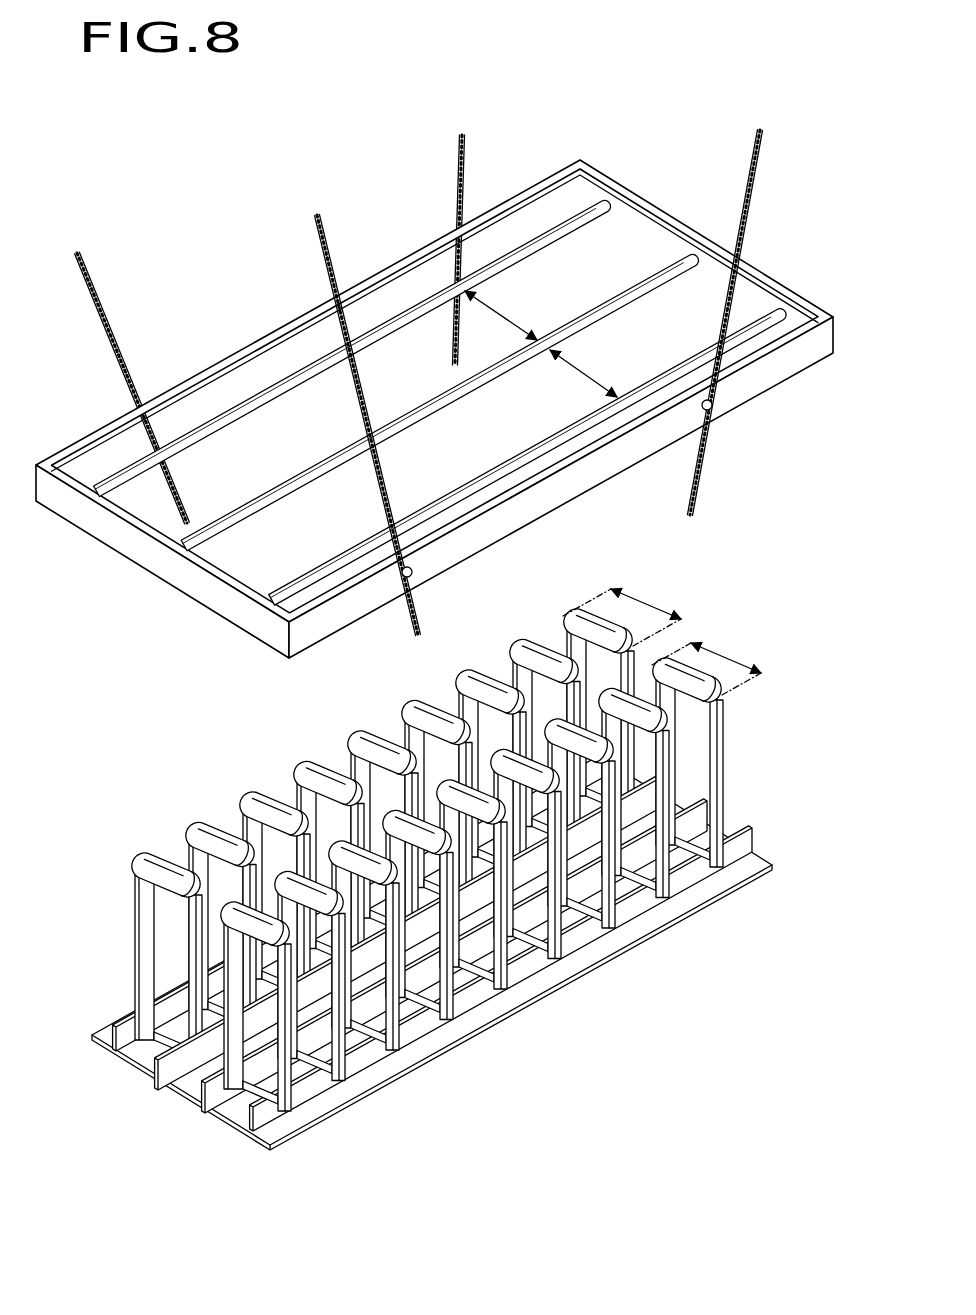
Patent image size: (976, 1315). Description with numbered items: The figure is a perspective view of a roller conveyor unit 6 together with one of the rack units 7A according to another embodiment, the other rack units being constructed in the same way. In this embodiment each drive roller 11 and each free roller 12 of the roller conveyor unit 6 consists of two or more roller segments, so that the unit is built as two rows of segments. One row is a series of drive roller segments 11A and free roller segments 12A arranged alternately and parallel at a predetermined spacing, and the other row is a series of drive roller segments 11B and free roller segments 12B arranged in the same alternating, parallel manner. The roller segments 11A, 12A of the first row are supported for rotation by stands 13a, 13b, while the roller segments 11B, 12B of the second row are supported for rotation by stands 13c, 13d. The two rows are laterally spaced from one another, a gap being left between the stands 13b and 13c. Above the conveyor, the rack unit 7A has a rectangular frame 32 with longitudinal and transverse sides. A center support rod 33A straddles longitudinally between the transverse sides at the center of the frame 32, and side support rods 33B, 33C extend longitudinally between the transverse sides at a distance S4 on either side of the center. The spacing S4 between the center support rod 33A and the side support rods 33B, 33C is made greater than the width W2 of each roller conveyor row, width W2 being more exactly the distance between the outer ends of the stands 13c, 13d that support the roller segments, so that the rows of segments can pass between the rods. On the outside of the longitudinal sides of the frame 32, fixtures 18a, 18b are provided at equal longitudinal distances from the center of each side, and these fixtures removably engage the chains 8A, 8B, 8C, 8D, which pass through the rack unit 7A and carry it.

The roller conveyor unit 6 is at (410, 881).
The rack unit 7A is at (624, 180).
The chain 8A is at (323, 250).
The chain 8B is at (752, 203).
The chain 8C is at (105, 305).
The chain 8D is at (467, 141).
The drive roller 11 is at (206, 906).
The drive roller segment 11A is at (347, 860).
The drive roller segment 11B is at (263, 797).
The free roller 12 is at (260, 857).
The free roller segment 12A is at (392, 797).
The free roller segment 12B is at (332, 783).
The stand 13a is at (253, 1057).
The stand 13b is at (173, 1087).
The stand 13c is at (160, 838).
The stand 13d is at (150, 838).
The fixture 18a is at (418, 579).
The fixture 18b is at (712, 410).
The rectangular frame 32 is at (186, 580).
The center support rod 33A is at (297, 489).
The side support rod 33B is at (458, 497).
The side support rod 33C is at (262, 402).
The spacing S4 is at (542, 344).
The width W2 is at (662, 642).